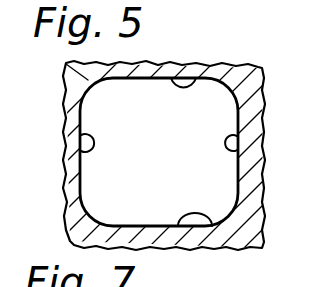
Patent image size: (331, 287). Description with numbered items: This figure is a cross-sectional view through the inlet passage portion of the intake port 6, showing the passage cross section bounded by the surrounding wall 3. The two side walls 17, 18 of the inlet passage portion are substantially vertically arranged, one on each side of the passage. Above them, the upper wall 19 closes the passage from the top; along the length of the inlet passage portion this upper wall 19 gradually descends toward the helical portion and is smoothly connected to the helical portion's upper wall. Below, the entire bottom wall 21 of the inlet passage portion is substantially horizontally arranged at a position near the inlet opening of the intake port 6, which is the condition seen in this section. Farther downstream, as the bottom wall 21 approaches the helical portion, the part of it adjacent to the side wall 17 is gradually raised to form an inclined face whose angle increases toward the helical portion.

The tubular wall / housing 3 is at (247, 87).
The intake port 6 is at (178, 151).
The side wall 17 is at (239, 145).
The side wall 18 is at (80, 143).
The upper wall 19 is at (199, 79).
The bottom wall 21 is at (207, 234).